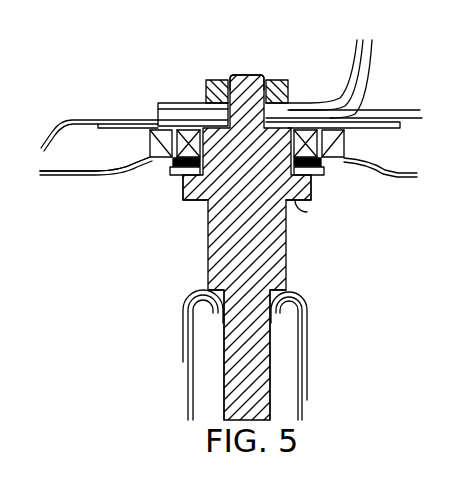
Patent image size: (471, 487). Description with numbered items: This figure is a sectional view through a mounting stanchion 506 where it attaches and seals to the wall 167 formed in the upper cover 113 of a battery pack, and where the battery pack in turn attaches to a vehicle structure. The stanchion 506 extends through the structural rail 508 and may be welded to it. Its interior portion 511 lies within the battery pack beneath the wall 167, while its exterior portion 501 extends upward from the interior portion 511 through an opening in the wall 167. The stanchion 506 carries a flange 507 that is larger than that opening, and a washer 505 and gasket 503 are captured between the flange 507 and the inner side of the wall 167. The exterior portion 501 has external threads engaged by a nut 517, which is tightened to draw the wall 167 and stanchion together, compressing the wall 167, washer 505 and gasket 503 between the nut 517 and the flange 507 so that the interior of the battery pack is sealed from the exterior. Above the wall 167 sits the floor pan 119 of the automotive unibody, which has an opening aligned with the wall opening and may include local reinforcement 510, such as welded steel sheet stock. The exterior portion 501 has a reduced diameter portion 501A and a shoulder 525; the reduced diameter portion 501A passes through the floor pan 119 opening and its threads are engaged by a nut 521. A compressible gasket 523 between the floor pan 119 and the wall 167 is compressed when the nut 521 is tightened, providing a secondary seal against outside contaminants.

The upper cover 113 is at (93, 236).
The floor pan 119 is at (68, 118).
The wall 167 is at (98, 173).
The exterior portion 501 is at (286, 124).
The reduced diameter portion 501A is at (255, 75).
The gasket 503 is at (150, 162).
The washer 505 is at (183, 177).
The stanchion 506 is at (223, 322).
The flange 507 is at (296, 201).
The structural rail 508 is at (192, 368).
The local reinforcement 510 is at (138, 130).
The interior portion 511 is at (313, 275).
The nut 517 is at (325, 162).
The nut 521 is at (228, 120).
The gasket 523 is at (344, 130).
The shoulder 525 is at (207, 124).